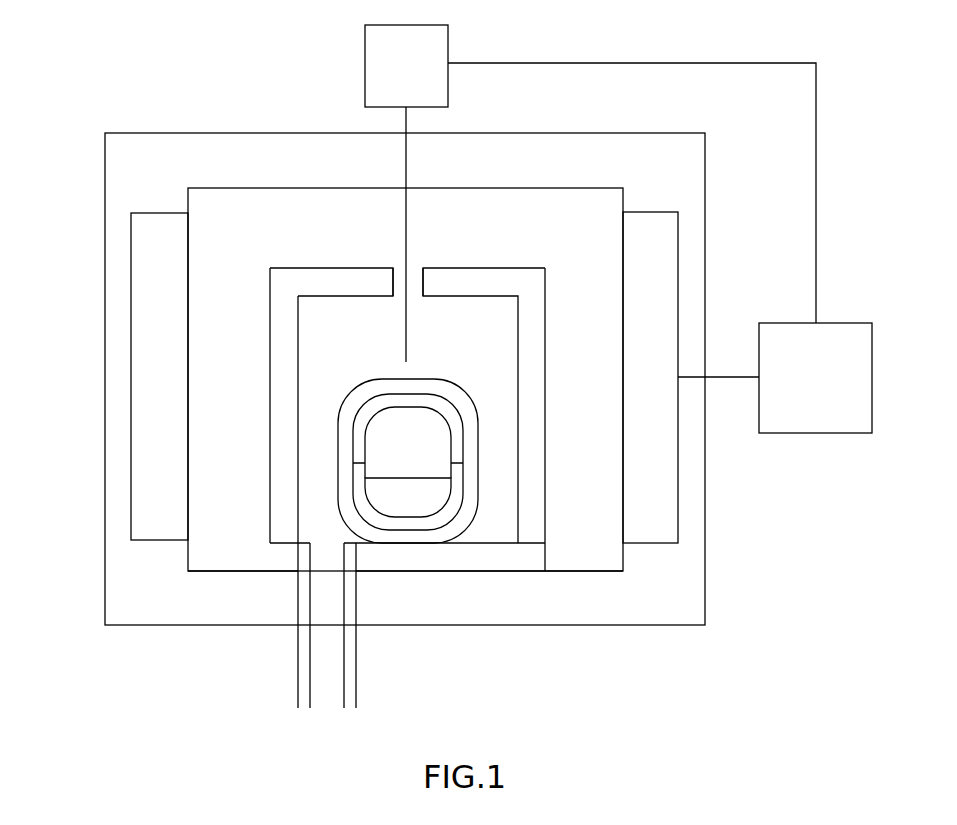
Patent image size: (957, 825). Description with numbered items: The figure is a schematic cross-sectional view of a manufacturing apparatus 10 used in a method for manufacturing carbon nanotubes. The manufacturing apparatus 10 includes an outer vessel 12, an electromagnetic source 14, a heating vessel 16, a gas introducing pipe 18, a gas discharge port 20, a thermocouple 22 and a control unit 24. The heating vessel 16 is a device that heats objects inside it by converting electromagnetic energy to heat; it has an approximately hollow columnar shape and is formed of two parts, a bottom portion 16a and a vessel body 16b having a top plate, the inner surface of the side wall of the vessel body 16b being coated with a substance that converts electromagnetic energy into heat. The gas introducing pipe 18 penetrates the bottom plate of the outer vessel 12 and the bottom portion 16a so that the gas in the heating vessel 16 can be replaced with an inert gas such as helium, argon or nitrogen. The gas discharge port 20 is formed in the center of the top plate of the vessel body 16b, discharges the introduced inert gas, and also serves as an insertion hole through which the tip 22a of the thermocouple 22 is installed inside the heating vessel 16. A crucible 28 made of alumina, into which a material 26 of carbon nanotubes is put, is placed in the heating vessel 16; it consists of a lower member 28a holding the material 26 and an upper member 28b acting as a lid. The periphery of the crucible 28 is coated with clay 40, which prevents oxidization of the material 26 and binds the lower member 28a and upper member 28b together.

The manufacturing apparatus 10 is at (124, 121).
The outer vessel 12 is at (125, 550).
The electromagnetic source 14 is at (158, 233).
The heating vessel 16 is at (607, 642).
The bottom portion 16a is at (512, 563).
The vessel body 16b is at (533, 527).
The gas introducing pipe 18 is at (303, 665).
The gas discharge port 20 is at (415, 270).
The thermocouple 22 is at (383, 52).
The tip 22a is at (405, 358).
The control unit 24 is at (820, 420).
The material 26 is at (407, 507).
The crucible 28 is at (463, 414).
The lower member 28a is at (457, 485).
The upper member 28b is at (457, 453).
The clay 40 is at (345, 457).